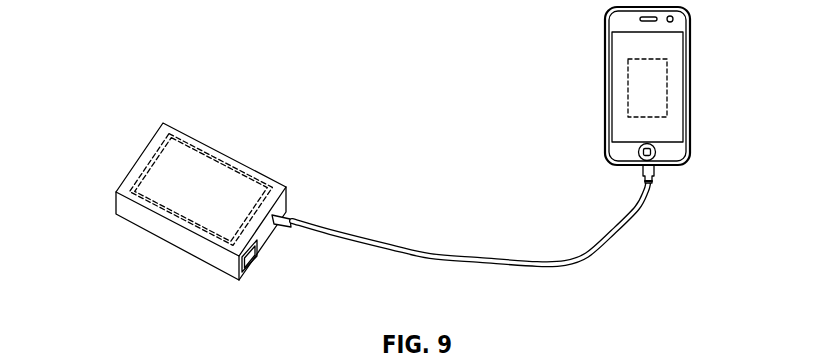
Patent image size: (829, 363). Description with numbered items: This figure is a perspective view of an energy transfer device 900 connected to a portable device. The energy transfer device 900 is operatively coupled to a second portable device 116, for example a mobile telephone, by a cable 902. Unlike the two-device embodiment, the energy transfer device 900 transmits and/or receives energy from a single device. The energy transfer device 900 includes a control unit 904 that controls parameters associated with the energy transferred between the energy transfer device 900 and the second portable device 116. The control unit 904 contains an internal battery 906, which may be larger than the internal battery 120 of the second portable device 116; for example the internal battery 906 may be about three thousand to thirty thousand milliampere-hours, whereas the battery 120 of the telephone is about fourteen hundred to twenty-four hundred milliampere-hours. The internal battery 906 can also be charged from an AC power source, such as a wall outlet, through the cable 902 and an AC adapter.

The energy transfer device 900 is at (177, 79).
The cable 902 is at (622, 247).
The control unit 904 is at (233, 163).
The internal battery 906 is at (143, 172).
The second portable device 116 is at (692, 85).
The rechargeable battery 120 is at (628, 88).